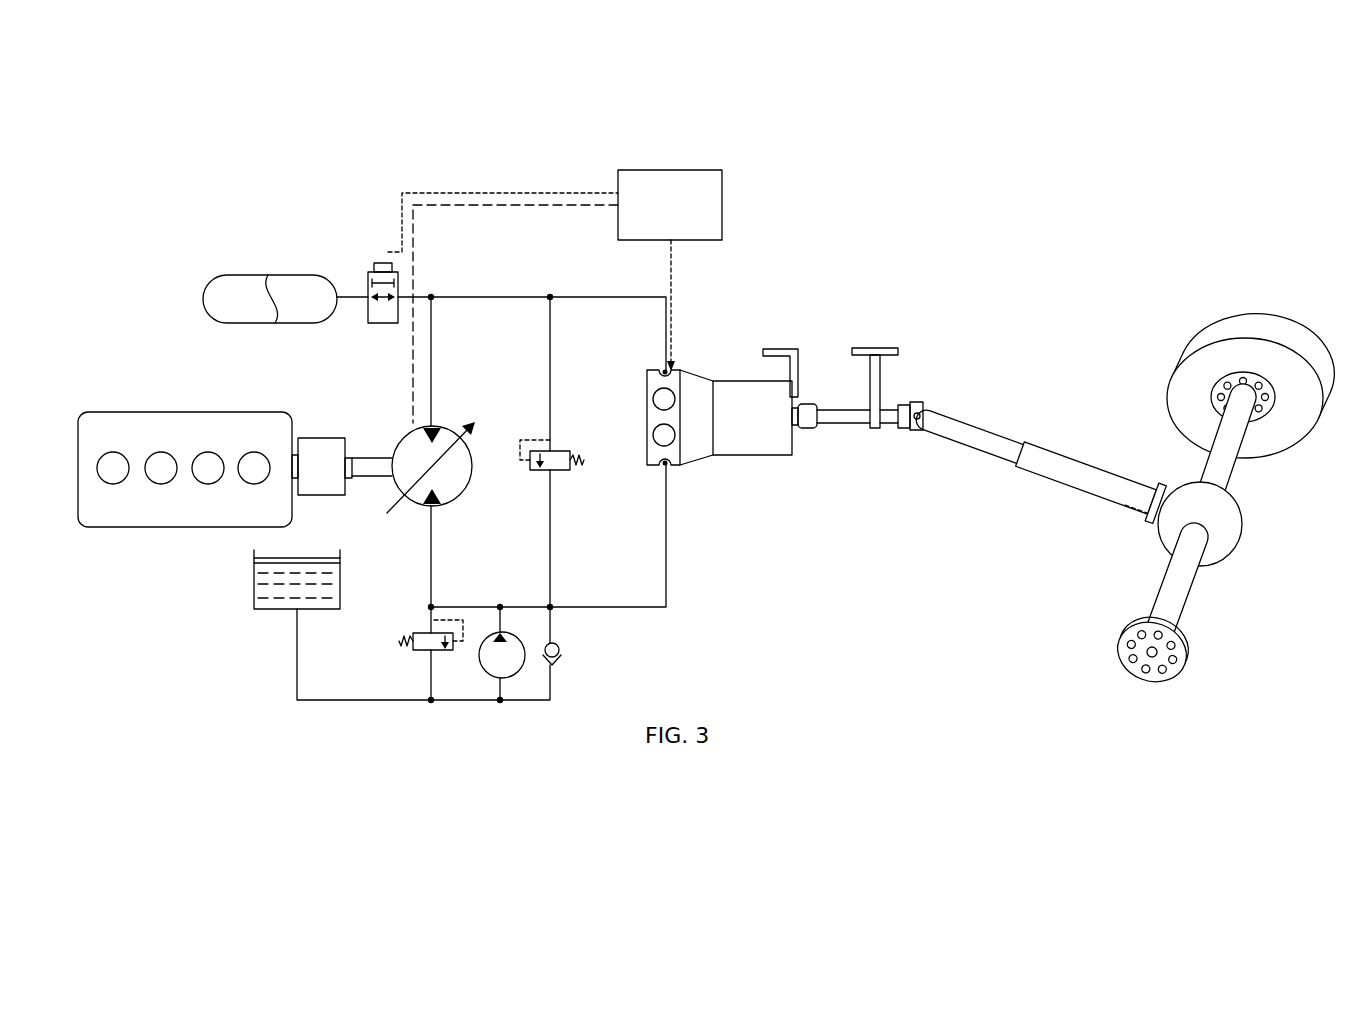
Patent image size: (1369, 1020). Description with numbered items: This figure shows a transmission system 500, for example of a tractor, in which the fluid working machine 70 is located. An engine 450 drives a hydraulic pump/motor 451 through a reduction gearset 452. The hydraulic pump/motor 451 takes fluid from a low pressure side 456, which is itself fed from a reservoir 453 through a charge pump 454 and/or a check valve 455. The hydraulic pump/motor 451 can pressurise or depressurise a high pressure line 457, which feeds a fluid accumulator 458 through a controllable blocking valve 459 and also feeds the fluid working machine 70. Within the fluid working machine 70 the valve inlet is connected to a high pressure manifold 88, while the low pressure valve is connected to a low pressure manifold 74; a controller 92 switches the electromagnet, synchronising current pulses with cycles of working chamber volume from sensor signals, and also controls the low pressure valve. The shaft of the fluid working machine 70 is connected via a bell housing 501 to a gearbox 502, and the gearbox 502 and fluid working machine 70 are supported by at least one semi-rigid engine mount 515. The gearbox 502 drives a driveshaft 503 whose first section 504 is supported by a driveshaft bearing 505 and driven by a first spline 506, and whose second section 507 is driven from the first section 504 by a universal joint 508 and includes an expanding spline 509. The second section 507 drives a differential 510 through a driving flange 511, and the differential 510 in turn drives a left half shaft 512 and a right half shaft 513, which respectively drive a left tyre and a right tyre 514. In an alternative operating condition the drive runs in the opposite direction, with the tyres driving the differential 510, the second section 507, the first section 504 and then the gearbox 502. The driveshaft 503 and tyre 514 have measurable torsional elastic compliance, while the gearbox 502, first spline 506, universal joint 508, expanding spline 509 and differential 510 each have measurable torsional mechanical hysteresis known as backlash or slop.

The transmission system 500 is at (160, 190).
The engine 450 is at (103, 412).
The hydraulic pump/motor 451 is at (468, 493).
The reduction gearset 452 is at (319, 438).
The reservoir 453 is at (254, 592).
The charge pump 454 is at (505, 678).
The check valve 455 is at (561, 657).
The low pressure side 456 is at (470, 607).
The high pressure line 457 is at (491, 297).
The fluid accumulator 458 is at (233, 275).
The controllable blocking valve 459 is at (382, 263).
The controller 92 is at (685, 217).
The high pressure manifold 88 is at (662, 372).
The fluid working machine 70 is at (650, 418).
The low pressure manifold 74 is at (659, 467).
The bell housing 501 is at (697, 460).
The gearbox 502 is at (772, 431).
The driveshaft 503 is at (944, 410).
The first section 504 is at (858, 425).
The driveshaft bearing 505 is at (874, 348).
The first spline 506 is at (806, 430).
The second section 507 is at (1005, 434).
The universal joint 508 is at (906, 430).
The expanding spline 509 is at (1016, 468).
The differential 510 is at (1232, 536).
The driving flange 511 is at (1147, 519).
The left half shaft 512 is at (1178, 597).
The right half shaft 513 is at (1206, 471).
The right tyre 514 is at (1175, 387).
The semi-rigid engine mount 515 is at (780, 349).